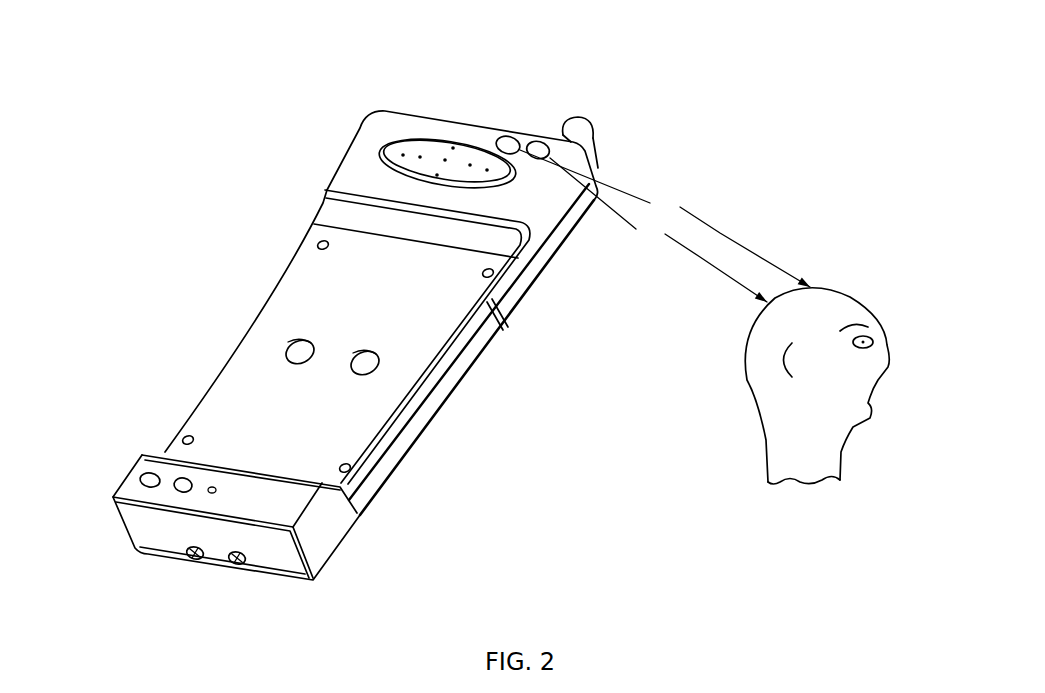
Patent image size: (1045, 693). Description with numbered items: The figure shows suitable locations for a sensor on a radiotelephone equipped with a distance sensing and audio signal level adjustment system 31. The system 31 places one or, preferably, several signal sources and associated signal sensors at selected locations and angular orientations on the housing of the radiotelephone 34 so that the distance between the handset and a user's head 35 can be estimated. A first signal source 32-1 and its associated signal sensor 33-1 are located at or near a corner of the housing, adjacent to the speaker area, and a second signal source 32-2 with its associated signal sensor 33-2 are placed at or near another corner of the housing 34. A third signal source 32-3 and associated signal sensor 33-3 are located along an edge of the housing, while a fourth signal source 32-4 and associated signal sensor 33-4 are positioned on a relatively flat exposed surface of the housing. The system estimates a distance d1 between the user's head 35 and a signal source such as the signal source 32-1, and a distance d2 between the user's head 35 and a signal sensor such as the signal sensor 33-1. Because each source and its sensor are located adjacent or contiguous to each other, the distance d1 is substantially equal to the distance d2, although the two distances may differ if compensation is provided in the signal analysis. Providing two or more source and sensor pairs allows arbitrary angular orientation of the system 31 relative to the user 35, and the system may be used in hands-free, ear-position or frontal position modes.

The distance sensing and audio signal level adjustment system 31 is at (640, 170).
The signal source 32-1 is at (509, 146).
The signal sensor 33-1 is at (540, 150).
The signal source 32-2 is at (180, 487).
The signal sensor 33-2 is at (146, 481).
The signal source 32-3 is at (194, 554).
The signal sensor 33-3 is at (235, 560).
The signal source 32-4 is at (300, 352).
The signal sensor 33-4 is at (364, 362).
The radiotelephone 34 is at (270, 502).
The user's head 35 is at (830, 310).
The distance d1 is at (658, 230).
The distance d2 is at (665, 218).